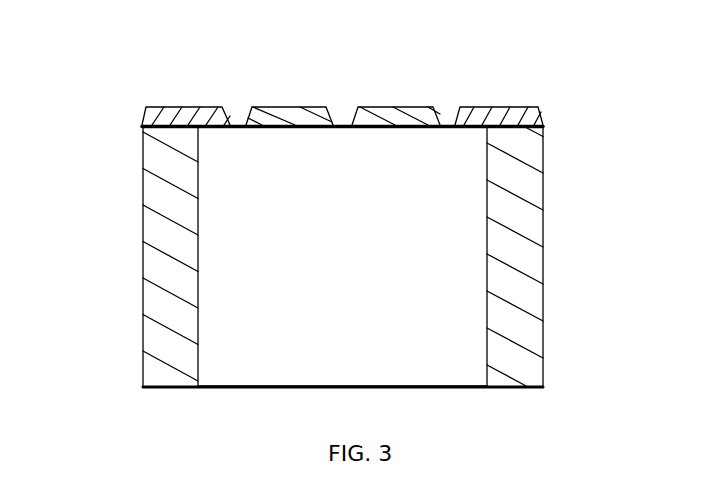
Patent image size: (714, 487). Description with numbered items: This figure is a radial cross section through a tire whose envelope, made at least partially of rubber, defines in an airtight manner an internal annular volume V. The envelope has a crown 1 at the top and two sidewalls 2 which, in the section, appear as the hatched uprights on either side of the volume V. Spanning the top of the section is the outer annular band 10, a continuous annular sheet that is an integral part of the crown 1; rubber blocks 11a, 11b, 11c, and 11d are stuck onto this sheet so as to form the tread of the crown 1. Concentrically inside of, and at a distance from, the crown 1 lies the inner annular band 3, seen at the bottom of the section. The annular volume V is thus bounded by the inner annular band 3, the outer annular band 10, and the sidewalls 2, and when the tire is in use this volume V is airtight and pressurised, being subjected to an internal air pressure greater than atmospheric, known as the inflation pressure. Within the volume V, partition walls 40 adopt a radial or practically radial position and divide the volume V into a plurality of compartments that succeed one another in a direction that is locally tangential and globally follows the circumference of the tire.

The crown 1 is at (500, 83).
The sidewalls 2 is at (172, 272).
The inner annular band 3 is at (245, 390).
The outer annular band 10 is at (447, 118).
The rubber block 11a is at (160, 110).
The rubber block 11b is at (263, 110).
The rubber block 11c is at (390, 110).
The rubber block 11d is at (510, 117).
The partition walls 40 is at (345, 368).
The internal annular volume V is at (442, 240).